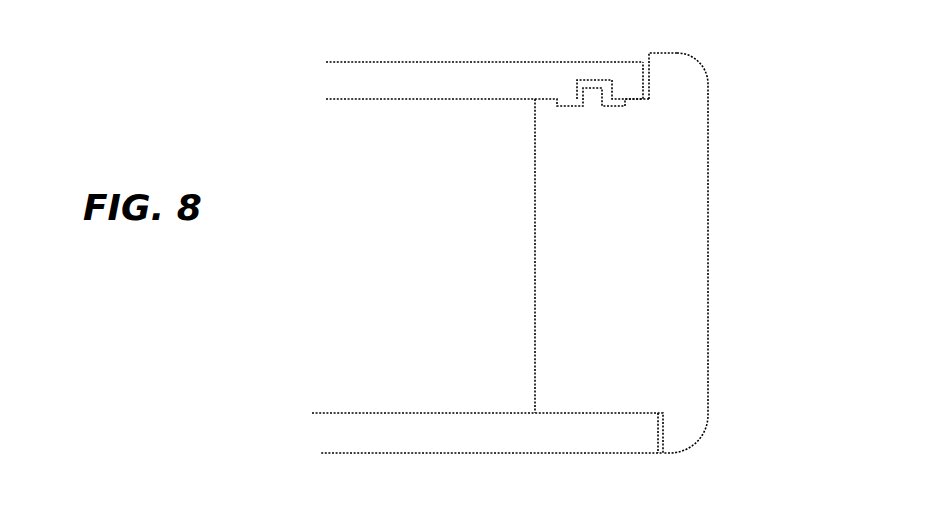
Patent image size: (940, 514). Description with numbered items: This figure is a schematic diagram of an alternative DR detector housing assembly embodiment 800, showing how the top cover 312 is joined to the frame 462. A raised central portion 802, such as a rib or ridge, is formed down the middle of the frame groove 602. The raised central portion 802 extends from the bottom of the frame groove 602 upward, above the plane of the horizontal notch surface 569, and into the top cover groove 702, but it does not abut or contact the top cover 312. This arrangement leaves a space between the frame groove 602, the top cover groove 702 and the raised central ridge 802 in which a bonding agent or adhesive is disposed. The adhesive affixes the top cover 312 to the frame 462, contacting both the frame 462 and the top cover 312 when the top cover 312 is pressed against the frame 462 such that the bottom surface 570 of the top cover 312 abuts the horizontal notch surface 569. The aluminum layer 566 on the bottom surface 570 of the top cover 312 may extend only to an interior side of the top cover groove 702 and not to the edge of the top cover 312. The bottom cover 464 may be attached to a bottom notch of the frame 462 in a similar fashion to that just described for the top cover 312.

The top cover 312 is at (335, 83).
The aluminum layer 566 is at (467, 100).
The horizontal notch surface 569 is at (549, 99).
The bottom surface 570 is at (549, 99).
The raised central portion 802 is at (597, 82).
The top cover groove 702 is at (610, 83).
The frame groove 602 is at (625, 107).
The frame 462 is at (695, 287).
The bottom cover 464 is at (328, 429).
The assembly embodiment 800 is at (848, 252).